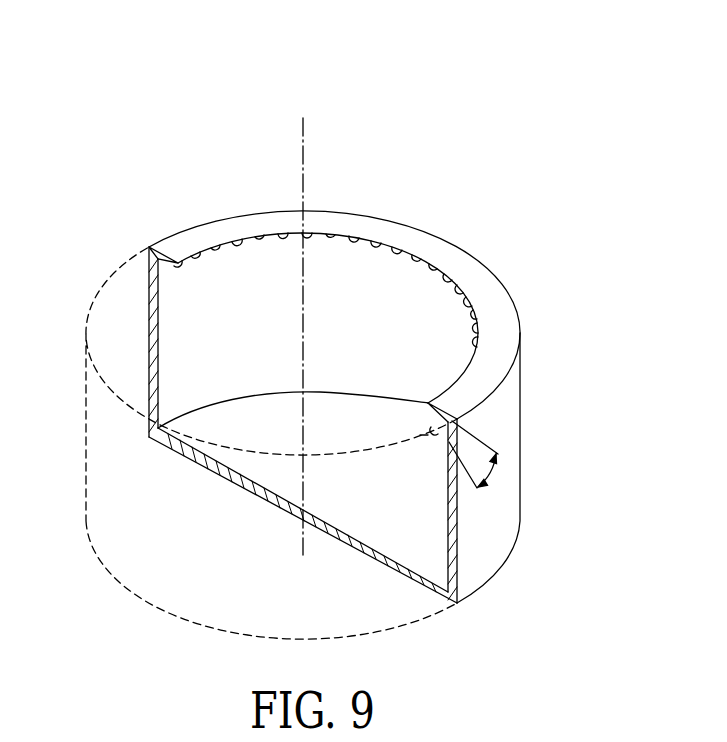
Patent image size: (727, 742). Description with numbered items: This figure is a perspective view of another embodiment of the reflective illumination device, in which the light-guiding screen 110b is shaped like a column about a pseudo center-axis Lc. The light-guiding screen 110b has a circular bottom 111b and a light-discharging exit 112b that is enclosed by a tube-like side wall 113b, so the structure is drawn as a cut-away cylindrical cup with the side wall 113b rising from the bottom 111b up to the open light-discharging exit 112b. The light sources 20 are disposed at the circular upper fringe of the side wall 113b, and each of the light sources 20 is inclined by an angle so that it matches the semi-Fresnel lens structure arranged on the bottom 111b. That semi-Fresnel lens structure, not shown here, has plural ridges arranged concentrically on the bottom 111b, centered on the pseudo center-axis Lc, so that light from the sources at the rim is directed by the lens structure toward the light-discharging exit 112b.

The light-guiding screen 110b is at (354, 380).
The circular bottom 111b is at (250, 491).
The light-discharging exit 112b is at (358, 297).
The tube-like side wall 113b is at (511, 419).
The light sources 20 is at (434, 431).
The pseudo center-axis Lc is at (305, 133).